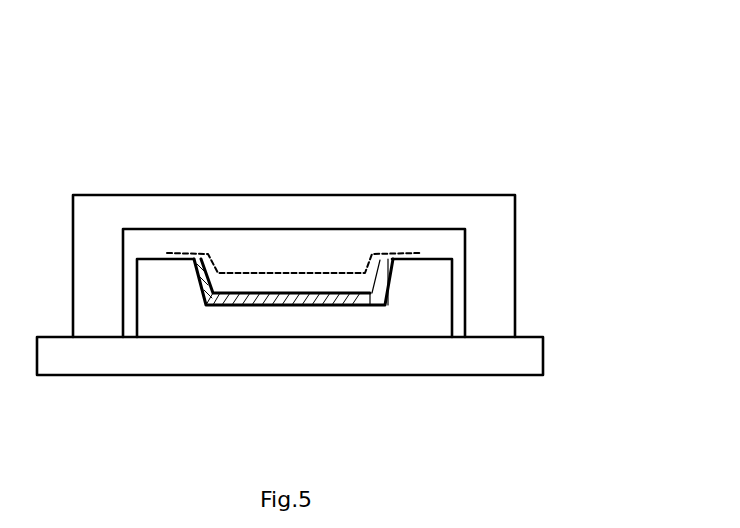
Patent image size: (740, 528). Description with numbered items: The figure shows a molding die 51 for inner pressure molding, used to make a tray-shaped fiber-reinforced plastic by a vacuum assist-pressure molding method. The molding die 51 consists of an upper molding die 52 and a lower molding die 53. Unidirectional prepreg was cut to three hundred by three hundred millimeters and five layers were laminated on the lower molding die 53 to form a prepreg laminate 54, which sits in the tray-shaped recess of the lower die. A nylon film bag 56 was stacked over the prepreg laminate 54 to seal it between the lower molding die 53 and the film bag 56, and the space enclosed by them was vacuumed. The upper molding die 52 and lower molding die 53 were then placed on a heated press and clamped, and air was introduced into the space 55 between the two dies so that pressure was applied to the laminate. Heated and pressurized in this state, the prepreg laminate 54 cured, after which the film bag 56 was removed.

The molding die for inner pressure molding 51 is at (509, 162).
The upper molding die 52 is at (492, 246).
The lower molding die 53 is at (503, 361).
The prepreg laminate 54 is at (279, 306).
The space 55 is at (306, 255).
The film bag 56 is at (238, 271).